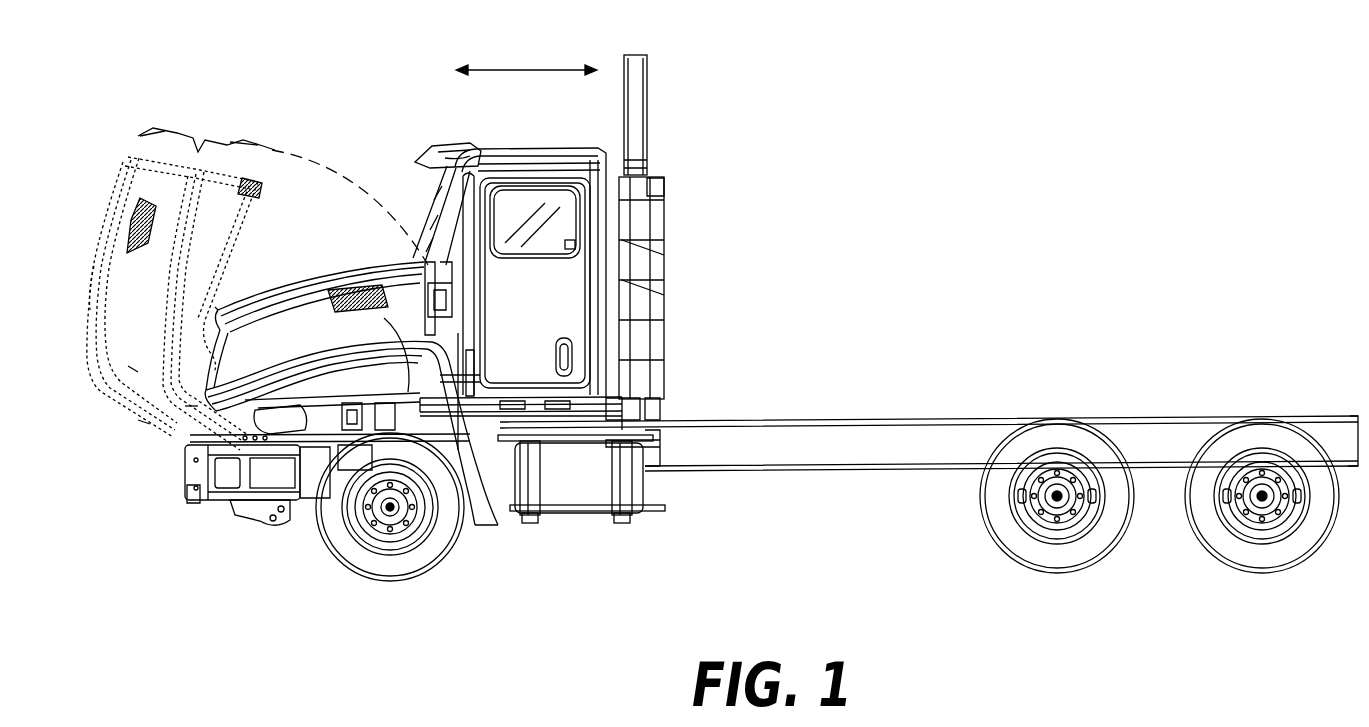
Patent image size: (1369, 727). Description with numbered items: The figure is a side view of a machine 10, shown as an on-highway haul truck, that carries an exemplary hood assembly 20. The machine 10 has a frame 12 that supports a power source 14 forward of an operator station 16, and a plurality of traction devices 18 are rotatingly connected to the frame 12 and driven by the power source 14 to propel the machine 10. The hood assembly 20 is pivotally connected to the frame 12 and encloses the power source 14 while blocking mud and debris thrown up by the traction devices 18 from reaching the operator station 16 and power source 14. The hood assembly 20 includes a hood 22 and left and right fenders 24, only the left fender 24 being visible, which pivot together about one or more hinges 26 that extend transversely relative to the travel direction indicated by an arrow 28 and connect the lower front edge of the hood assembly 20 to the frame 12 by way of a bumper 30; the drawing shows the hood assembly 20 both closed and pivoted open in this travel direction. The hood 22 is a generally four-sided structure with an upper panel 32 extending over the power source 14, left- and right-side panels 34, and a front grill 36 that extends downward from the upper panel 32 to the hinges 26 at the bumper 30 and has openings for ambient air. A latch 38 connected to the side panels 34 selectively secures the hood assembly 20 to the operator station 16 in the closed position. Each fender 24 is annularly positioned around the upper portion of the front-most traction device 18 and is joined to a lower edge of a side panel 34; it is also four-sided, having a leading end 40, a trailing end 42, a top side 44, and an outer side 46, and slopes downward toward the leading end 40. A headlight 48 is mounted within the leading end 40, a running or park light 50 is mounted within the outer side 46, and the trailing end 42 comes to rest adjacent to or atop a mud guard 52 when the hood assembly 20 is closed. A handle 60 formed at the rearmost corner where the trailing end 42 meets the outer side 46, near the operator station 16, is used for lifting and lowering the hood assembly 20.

The machine 10 is at (866, 98).
The frame 12 is at (767, 457).
The power source 14 is at (294, 262).
The operator station 16 is at (524, 163).
The traction devices 18 is at (462, 540).
The hood assembly 20 is at (208, 88).
The hood 22 is at (176, 132).
The fenders 24 is at (248, 136).
The hinges 26 is at (186, 462).
The arrow 28 is at (545, 62).
The bumper 30 is at (192, 500).
The upper panel 32 is at (94, 266).
The side panels 34 is at (132, 368).
The front grill 36 is at (143, 422).
The latch 38 is at (467, 322).
The leading end 40 is at (242, 508).
The trailing end 42 is at (474, 354).
The top side 44 is at (318, 356).
The outer side 46 is at (393, 328).
The headlight 48 is at (188, 410).
The running or park light 50 is at (227, 304).
The mud guard 52 is at (507, 522).
The handle 60 is at (279, 162).